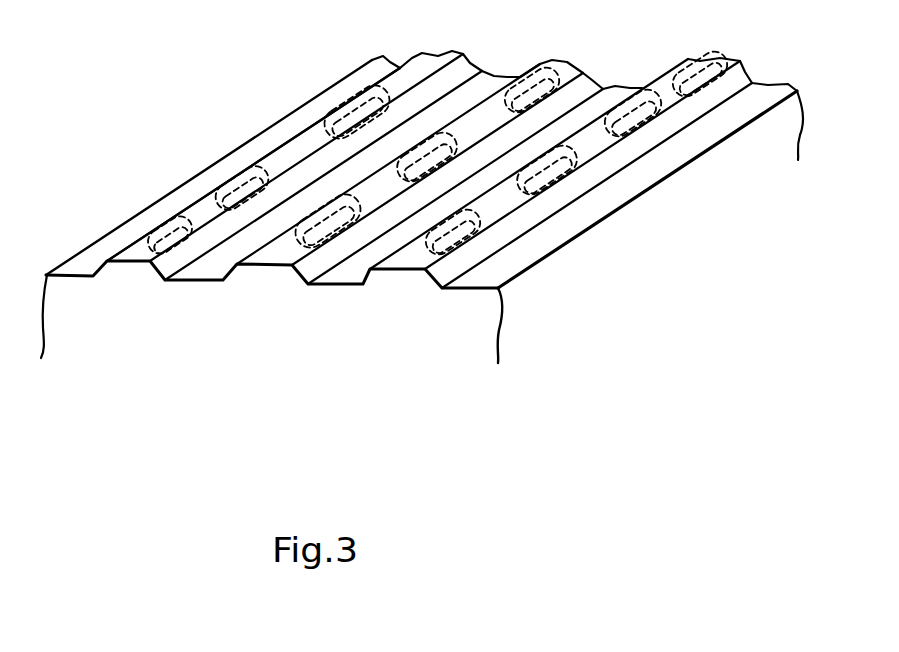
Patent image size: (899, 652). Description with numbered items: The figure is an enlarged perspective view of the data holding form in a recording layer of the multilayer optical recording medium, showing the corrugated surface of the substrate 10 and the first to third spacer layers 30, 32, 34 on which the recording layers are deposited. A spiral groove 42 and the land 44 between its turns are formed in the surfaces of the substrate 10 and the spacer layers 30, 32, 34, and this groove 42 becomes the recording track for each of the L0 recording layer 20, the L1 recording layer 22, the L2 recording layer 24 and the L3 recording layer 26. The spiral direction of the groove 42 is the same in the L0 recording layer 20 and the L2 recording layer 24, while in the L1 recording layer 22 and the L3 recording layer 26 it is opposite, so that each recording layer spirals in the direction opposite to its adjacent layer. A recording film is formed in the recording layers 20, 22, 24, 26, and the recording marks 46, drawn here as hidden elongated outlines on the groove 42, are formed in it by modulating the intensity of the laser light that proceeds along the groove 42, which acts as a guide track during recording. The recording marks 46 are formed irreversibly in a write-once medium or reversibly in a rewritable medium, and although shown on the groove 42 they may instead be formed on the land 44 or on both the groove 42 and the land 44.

The substrate 10 is at (416, 231).
The first spacer layer 30 is at (416, 231).
The second spacer layer 32 is at (416, 231).
The third spacer layer 34 is at (416, 231).
The L0 recording layer 20 is at (214, 207).
The L1 recording layer 22 is at (214, 207).
The L2 recording layer 24 is at (214, 207).
The L3 recording layer 26 is at (118, 234).
The groove 42 is at (138, 256).
The land 44 is at (85, 268).
The recording mark 46 is at (362, 100).